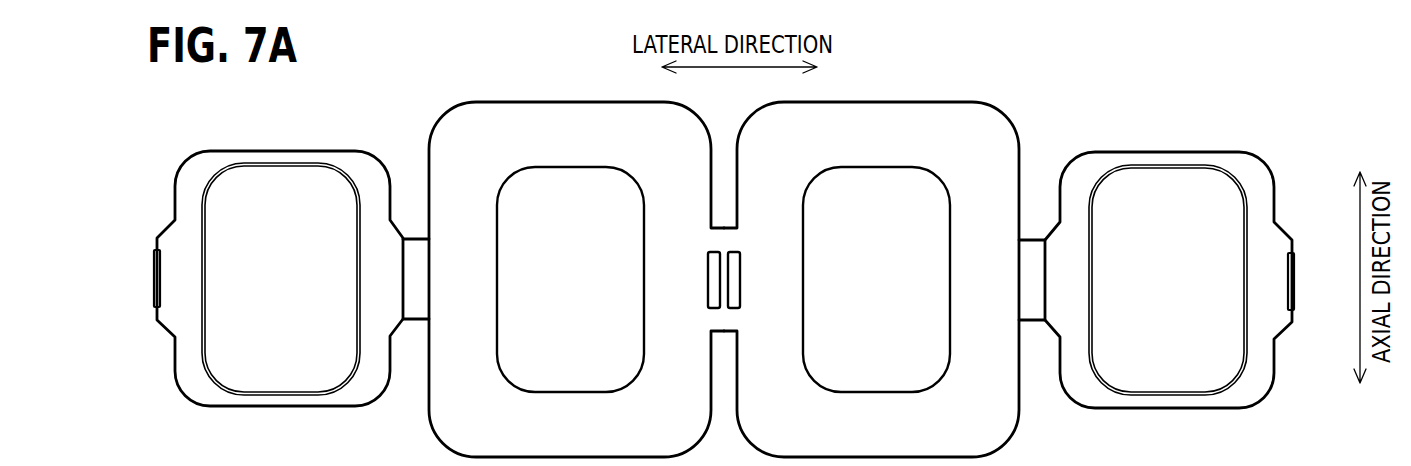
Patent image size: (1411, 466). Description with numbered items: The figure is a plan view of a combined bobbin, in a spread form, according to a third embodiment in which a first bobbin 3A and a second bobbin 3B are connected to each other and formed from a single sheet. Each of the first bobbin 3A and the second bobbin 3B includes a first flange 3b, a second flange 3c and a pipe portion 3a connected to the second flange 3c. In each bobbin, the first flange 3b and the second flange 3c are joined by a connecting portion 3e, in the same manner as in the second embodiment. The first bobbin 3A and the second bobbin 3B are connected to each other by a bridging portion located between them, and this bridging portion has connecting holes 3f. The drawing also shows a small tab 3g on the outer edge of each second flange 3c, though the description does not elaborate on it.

The first bobbin 3A is at (1082, 115).
The second bobbin 3B is at (369, 118).
The pipe portion 3a is at (272, 163).
The first flange 3b is at (592, 130).
The second flange 3c is at (193, 185).
The connecting portion 3e is at (418, 257).
The connecting holes 3f is at (734, 253).
The tab 3g is at (157, 291).